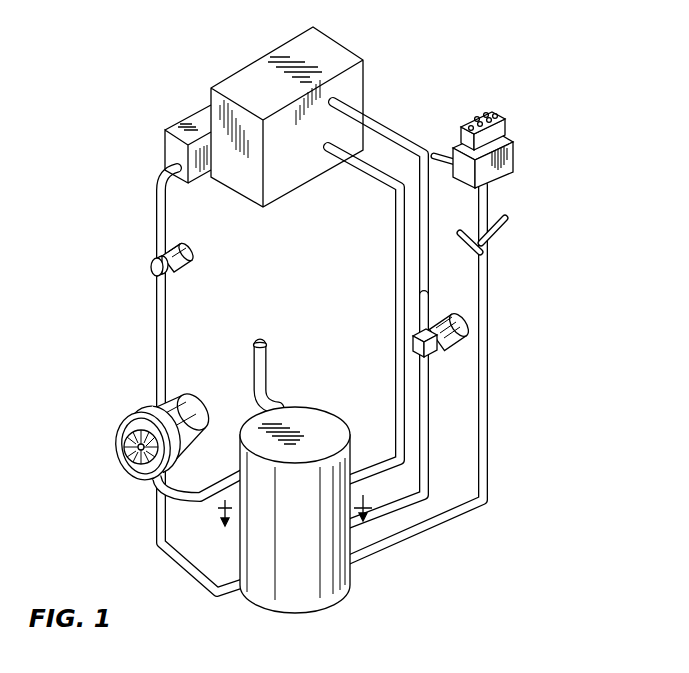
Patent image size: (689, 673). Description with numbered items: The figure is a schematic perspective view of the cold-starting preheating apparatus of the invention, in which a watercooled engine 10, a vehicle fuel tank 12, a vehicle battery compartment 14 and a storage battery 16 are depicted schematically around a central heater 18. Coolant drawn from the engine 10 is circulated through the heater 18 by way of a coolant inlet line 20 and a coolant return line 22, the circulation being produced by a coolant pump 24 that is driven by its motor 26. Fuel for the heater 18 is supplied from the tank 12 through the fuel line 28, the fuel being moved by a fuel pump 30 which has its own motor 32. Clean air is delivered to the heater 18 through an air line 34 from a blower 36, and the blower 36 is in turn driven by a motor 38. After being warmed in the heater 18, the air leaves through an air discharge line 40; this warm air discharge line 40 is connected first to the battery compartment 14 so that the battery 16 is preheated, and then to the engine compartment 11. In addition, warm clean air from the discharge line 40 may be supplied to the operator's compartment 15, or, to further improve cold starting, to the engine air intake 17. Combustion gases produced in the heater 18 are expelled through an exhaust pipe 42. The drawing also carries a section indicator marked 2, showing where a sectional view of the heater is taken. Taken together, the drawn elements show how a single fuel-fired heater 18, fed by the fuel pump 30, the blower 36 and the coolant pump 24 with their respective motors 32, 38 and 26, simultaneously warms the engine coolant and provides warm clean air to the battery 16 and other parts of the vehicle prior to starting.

The watercooled engine 10 is at (340, 43).
The engine compartment 11 is at (438, 156).
The vehicle fuel tank 12 is at (175, 128).
The vehicle battery compartment 14 is at (513, 157).
The operator's compartment 15 is at (505, 222).
The storage battery 16 is at (495, 125).
The engine air intake 17 is at (490, 250).
The heater 18 is at (307, 410).
The coolant inlet line 20 is at (430, 473).
The coolant return line 22 is at (396, 276).
The coolant pump 24 is at (432, 346).
The motor 26 is at (460, 325).
The fuel line 28 is at (157, 358).
The fuel pump 30 is at (152, 270).
The motor 32 is at (190, 258).
The air line 34 is at (150, 488).
The blower 36 is at (118, 441).
The motor 38 is at (192, 392).
The air discharge line 40 is at (490, 455).
The exhaust pipe 42 is at (268, 352).
The section line 2- 2 is at (293, 507).